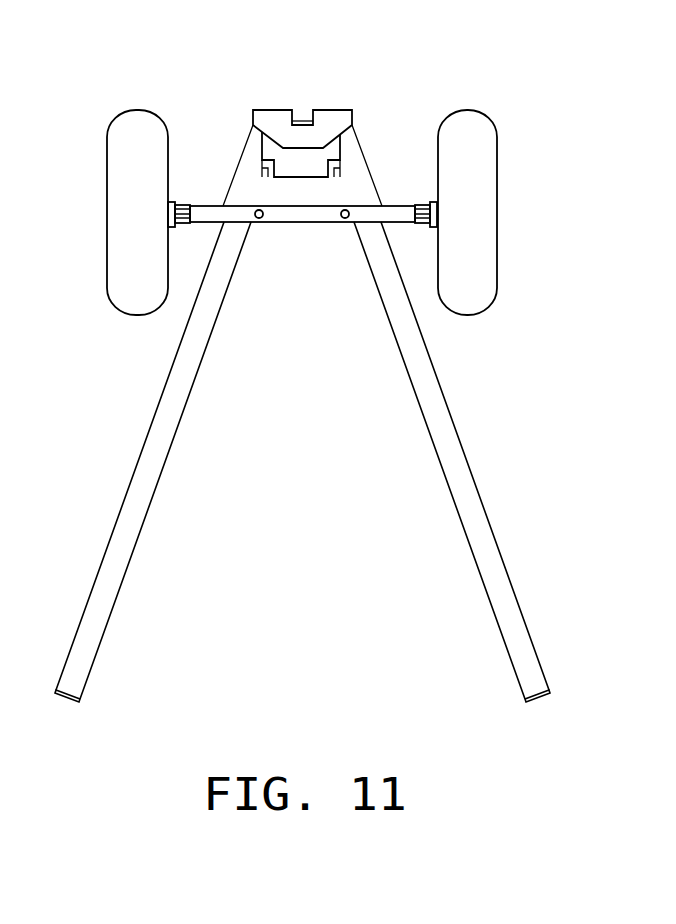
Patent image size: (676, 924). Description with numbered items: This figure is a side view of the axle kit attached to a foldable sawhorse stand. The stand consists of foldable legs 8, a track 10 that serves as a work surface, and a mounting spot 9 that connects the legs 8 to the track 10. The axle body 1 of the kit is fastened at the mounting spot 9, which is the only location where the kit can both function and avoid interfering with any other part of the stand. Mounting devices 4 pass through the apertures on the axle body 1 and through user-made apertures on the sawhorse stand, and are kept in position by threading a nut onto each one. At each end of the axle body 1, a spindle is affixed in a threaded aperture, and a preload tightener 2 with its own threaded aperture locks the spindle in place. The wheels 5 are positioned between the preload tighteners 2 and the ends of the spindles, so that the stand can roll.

The axle body 1 is at (305, 222).
The preload tighteners 2 is at (184, 204).
The mounting devices 4 is at (259, 221).
The wheels 5 is at (132, 165).
The foldable legs 8 is at (132, 522).
The mounting spots 9 is at (257, 157).
The track 10 is at (325, 118).